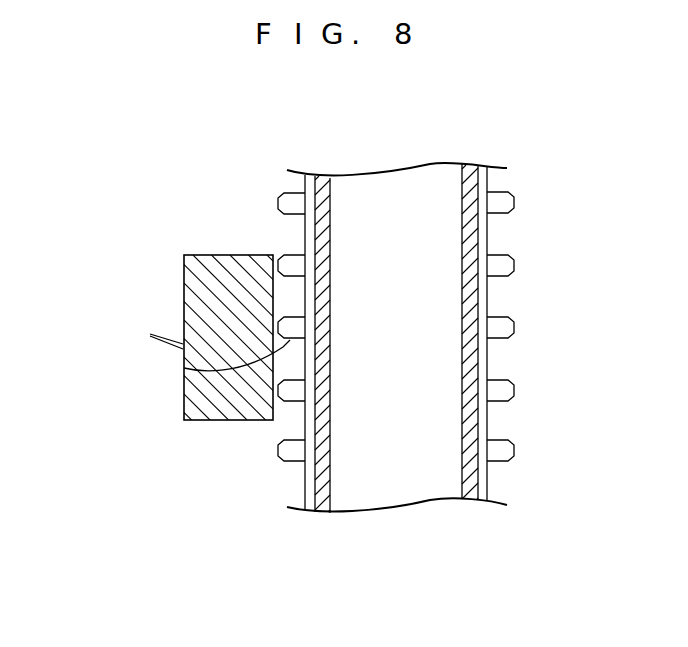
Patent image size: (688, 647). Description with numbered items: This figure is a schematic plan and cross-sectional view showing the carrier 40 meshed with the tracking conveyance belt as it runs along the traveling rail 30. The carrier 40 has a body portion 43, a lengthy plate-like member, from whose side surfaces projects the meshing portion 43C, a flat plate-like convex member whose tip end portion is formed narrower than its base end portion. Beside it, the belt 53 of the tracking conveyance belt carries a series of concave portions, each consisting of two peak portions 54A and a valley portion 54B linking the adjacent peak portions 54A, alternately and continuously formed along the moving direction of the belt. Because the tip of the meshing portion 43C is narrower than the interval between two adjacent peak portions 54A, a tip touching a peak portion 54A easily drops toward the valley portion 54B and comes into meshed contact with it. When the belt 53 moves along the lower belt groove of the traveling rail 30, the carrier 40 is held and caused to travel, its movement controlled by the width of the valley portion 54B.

The traveling rail 30 is at (369, 330).
The carrier 40 is at (230, 383).
The body portion 43 is at (197, 302).
The meshing portion 43C is at (183, 329).
The belt 53 is at (467, 180).
The peak portion 54A is at (287, 203).
The valley portion 54B is at (305, 275).